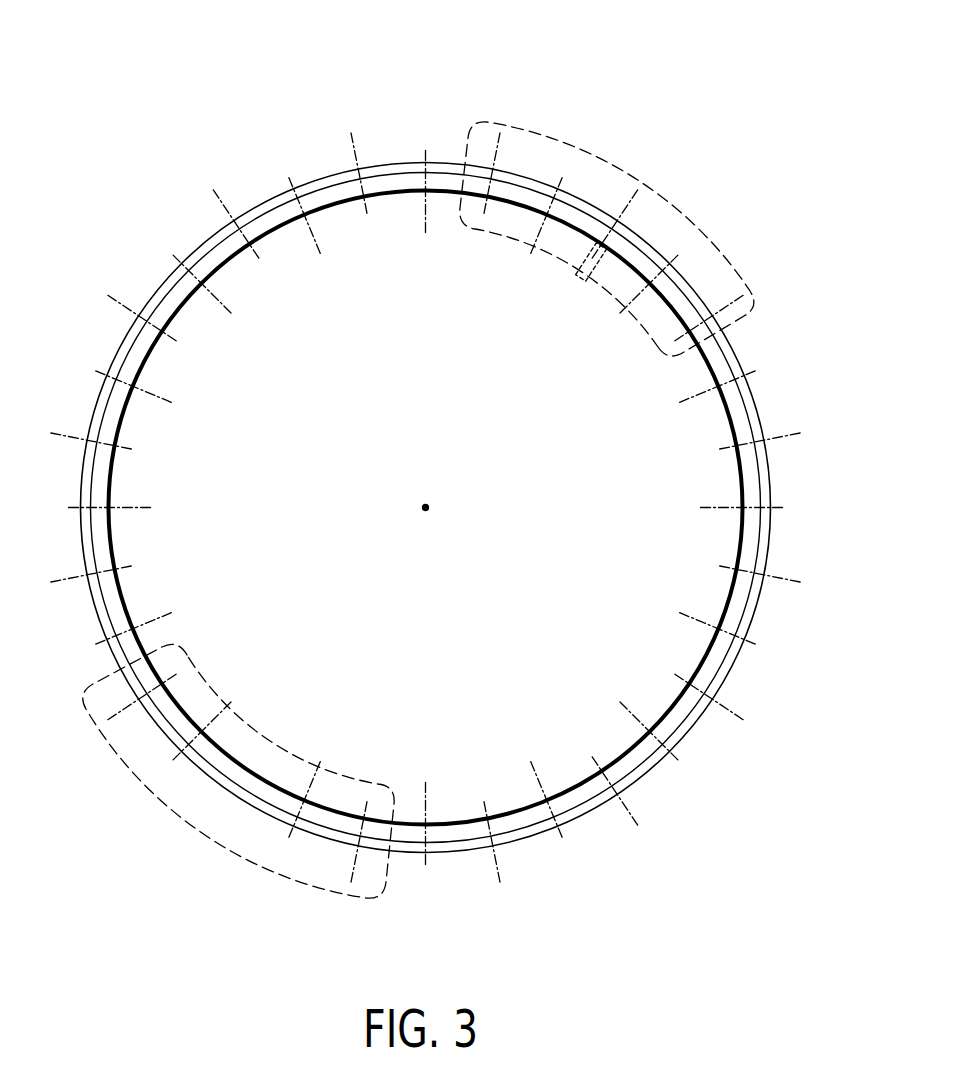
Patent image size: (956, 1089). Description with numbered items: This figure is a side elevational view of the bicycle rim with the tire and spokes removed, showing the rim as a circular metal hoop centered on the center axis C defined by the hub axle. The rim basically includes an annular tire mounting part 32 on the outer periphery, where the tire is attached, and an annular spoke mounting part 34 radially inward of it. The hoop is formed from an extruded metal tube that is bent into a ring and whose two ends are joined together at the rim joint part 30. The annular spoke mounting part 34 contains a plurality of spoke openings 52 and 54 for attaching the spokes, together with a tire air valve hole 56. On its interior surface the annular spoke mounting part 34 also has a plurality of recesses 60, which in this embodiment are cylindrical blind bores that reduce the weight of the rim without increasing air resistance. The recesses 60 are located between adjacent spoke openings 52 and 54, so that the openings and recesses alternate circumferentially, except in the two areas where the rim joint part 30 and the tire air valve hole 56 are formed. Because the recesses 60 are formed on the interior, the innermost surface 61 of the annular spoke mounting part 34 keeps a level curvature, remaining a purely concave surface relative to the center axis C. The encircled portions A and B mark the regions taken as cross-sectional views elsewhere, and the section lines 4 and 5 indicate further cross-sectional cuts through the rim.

The rim joint part 30 is at (245, 795).
The annular tire mounting part 32 is at (595, 203).
The annular spoke mounting part 34 is at (583, 233).
The spoke openings 52 is at (742, 508).
The spoke openings 54 is at (718, 386).
The tire air valve hole 56 is at (597, 262).
The recesses 60 is at (764, 440).
The innermost surface 61 is at (123, 417).
The section line 4- 4 is at (272, 132).
The section line 5- 5 is at (512, 100).
The encircled portion A is at (630, 172).
The encircled portion B is at (222, 846).
The center axis C is at (430, 500).